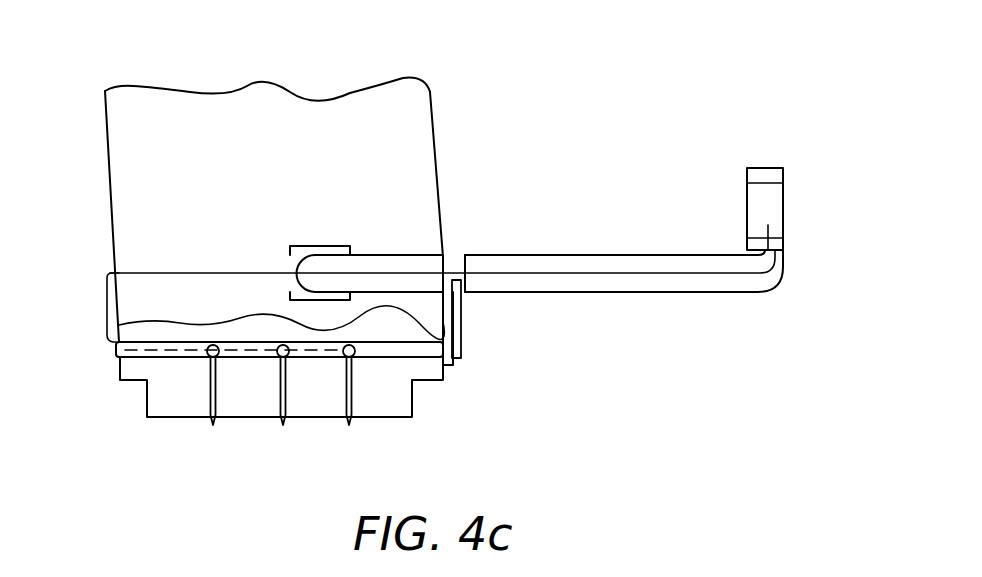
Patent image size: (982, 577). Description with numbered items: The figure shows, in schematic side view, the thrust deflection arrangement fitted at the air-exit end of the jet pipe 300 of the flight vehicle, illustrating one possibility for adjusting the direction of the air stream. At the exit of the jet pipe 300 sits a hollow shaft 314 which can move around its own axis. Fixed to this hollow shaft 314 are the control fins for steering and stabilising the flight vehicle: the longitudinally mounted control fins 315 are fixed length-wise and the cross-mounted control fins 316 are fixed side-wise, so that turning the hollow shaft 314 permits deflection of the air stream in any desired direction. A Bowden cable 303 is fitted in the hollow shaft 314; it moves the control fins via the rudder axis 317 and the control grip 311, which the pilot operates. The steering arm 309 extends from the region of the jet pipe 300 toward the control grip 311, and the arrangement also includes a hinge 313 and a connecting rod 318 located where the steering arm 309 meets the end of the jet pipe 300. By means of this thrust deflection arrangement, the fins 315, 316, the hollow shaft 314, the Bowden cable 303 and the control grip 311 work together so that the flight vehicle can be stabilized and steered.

The jet pipe 300 is at (418, 112).
The Bowden cable 303 is at (107, 343).
The steering arm 309 is at (657, 253).
The control grip 311 is at (770, 196).
The hinge 313 is at (462, 253).
The connecting rod 318 is at (462, 315).
The longitudinally mounted control fins 315 is at (168, 400).
The hollow shaft 314 is at (248, 397).
The rudder axis 317 is at (281, 345).
The cross-mounted control fins 316 is at (347, 392).